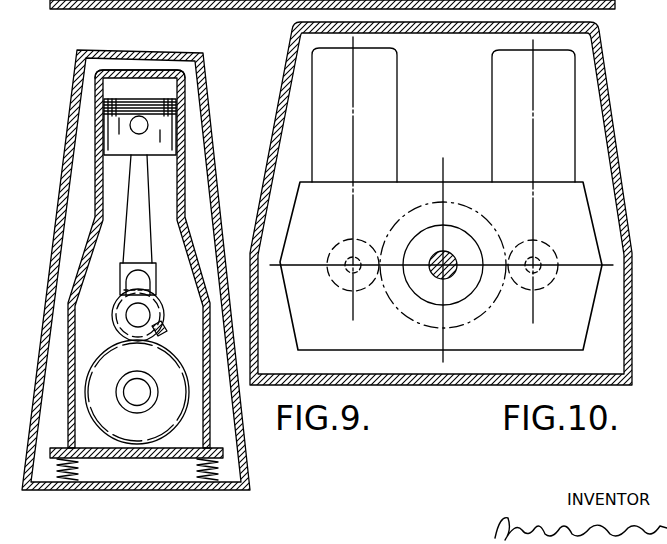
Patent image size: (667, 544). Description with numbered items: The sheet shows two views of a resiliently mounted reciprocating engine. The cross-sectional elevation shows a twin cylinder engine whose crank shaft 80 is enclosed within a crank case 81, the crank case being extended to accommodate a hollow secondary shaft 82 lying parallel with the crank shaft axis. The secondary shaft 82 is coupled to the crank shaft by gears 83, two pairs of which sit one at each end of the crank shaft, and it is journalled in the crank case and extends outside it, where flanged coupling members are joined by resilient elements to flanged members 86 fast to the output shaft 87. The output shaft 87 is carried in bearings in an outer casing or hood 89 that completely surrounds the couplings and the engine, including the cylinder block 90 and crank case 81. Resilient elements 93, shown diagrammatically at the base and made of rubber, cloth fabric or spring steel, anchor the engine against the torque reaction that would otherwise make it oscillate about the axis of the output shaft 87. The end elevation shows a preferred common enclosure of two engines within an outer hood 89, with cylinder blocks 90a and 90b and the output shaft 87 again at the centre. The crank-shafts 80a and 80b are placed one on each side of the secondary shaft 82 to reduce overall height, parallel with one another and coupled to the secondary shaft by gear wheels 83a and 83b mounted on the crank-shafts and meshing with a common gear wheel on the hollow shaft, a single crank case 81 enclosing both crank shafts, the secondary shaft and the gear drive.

In FIG. 9, the crank shaft 80 is at (141, 278).
In FIG. 9, the crank case 81 is at (79, 270).
In FIG. 10, the crank case 81 is at (460, 259).
In FIG. 9, the hollow secondary shaft 82 is at (123, 386).
In FIG. 9, the gears 83 is at (158, 323).
In FIG. 10, the flanged members 86 is at (464, 299).
In FIG. 10, the output shaft 87 is at (440, 268).
In FIG. 9, the outer casing or hood 89 is at (113, 51).
In FIG. 10, the outer casing or hood 89 is at (284, 68).
In FIG. 9, the cylinder block 90 is at (156, 71).
In FIG. 10, the cylinder block of first engine 90a is at (384, 77).
In FIG. 10, the cylinder block of second engine 90b is at (497, 117).
In FIG. 10, the first crank-shaft 80a is at (343, 258).
In FIG. 10, the second crank-shaft 80b is at (541, 256).
In FIG. 10, the gear wheel on first crank-shaft 83a is at (342, 280).
In FIG. 10, the gear wheel on second crank-shaft 83b is at (539, 287).
In FIG. 9, the resilient elements 93 is at (64, 481).